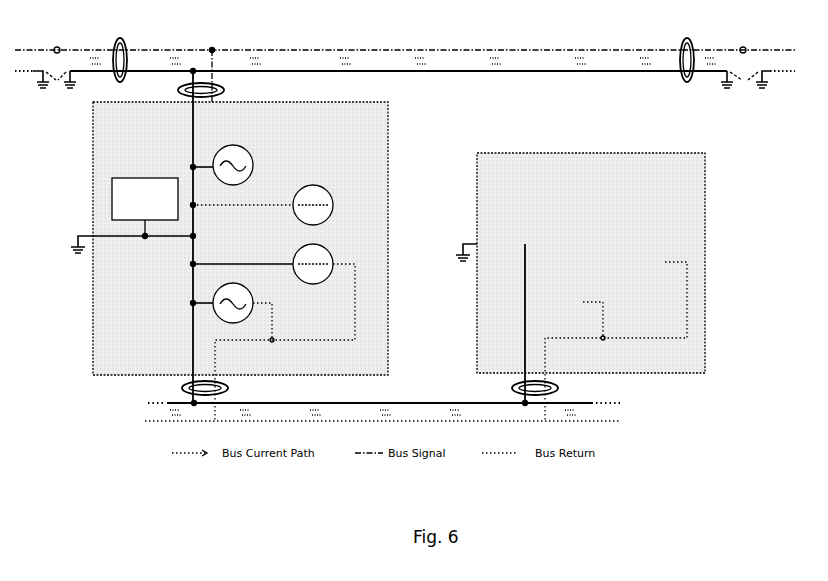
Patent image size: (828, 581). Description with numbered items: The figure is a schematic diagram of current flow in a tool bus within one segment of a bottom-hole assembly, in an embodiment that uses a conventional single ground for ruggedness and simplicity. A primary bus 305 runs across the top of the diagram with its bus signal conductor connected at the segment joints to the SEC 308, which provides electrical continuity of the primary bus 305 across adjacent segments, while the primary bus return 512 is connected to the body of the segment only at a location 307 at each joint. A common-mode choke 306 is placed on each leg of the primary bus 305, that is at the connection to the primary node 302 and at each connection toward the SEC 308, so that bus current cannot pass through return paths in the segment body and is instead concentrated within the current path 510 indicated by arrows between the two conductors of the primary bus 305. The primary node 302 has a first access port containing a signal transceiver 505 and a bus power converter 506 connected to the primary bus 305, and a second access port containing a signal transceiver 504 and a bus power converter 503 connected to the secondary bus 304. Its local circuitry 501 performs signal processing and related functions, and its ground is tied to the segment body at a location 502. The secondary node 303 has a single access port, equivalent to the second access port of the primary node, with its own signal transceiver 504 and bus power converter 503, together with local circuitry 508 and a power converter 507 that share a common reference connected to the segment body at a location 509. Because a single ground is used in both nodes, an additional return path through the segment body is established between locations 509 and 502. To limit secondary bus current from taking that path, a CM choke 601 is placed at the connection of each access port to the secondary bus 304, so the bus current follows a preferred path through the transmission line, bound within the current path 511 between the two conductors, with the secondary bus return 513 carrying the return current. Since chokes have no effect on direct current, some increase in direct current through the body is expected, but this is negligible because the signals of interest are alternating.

The primary node 302 is at (90, 160).
The secondary node 303 is at (708, 230).
The secondary bus 304 is at (625, 420).
The primary bus 305 is at (560, 50).
The common-mode choke 306 is at (185, 68).
The location 307 is at (72, 90).
The SEC 308 is at (60, 48).
The local circuitry 501 is at (110, 200).
The location 502 is at (66, 247).
The bus power converter 503 is at (188, 263).
The signal transceiver 504 is at (188, 300).
The signal transceiver 505 is at (232, 125).
The bus power converter 506 is at (293, 128).
The power converter 507 is at (708, 197).
The local circuitry 508 is at (708, 168).
The location 509 is at (452, 244).
The current path 510 is at (502, 60).
The current path 511 is at (600, 402).
The primary bus return 512 is at (188, 166).
The secondary bus return 513 is at (190, 306).
The CM choke 601 is at (180, 388).